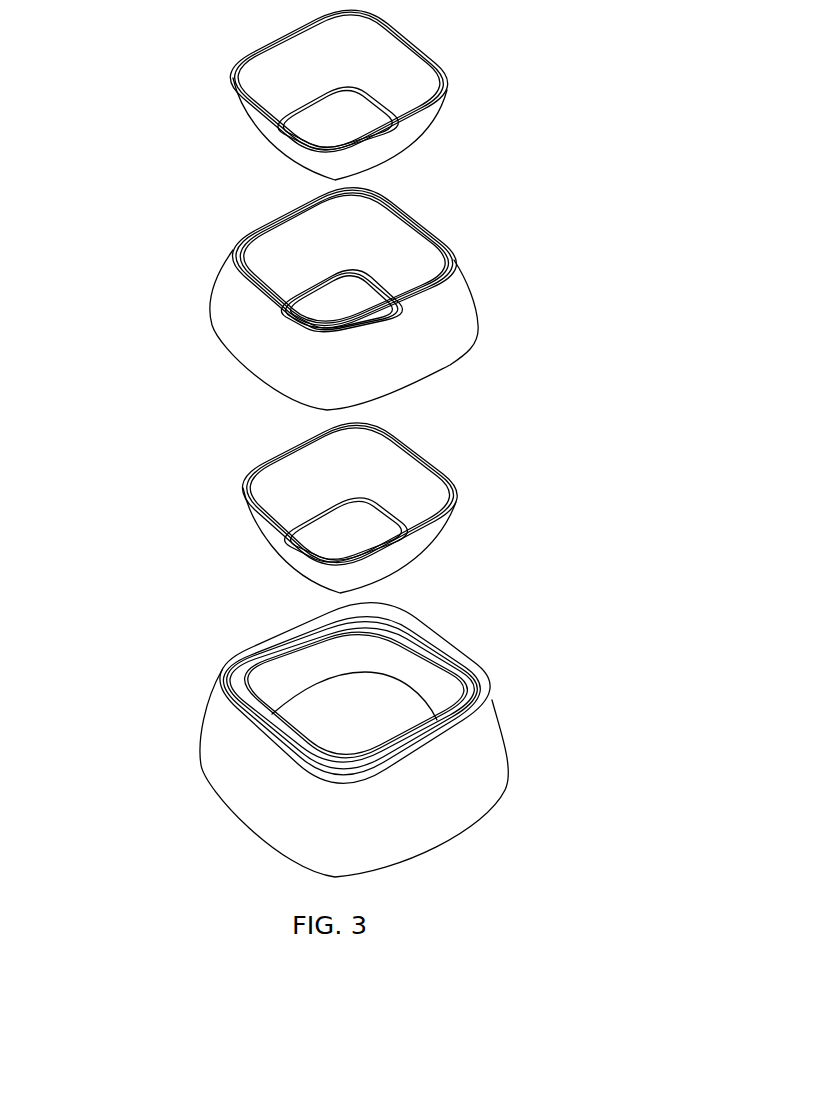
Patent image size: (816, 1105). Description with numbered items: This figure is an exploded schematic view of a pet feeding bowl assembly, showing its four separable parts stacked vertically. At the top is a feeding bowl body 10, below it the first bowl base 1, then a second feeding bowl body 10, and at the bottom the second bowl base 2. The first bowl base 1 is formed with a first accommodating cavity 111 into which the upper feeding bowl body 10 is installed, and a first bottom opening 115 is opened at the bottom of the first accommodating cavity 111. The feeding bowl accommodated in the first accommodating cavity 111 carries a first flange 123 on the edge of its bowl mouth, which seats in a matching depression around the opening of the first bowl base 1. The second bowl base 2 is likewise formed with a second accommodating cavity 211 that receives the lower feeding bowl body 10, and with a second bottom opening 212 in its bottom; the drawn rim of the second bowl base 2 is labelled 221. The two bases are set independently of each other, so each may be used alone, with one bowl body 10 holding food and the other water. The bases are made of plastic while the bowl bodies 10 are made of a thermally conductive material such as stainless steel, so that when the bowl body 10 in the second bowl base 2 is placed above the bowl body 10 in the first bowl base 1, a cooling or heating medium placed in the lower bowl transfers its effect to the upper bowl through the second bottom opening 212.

The feeding bowl body 10 is at (433, 113).
The first bowl base 1 is at (443, 328).
The first accommodating cavity 111 is at (390, 253).
The first flange 123 is at (455, 255).
The first bottom opening 115 is at (340, 312).
The second bowl base 2 is at (475, 778).
The flange rim 221 is at (453, 672).
The second accommodating cavity 211 is at (290, 680).
The second bottom opening 212 is at (328, 718).